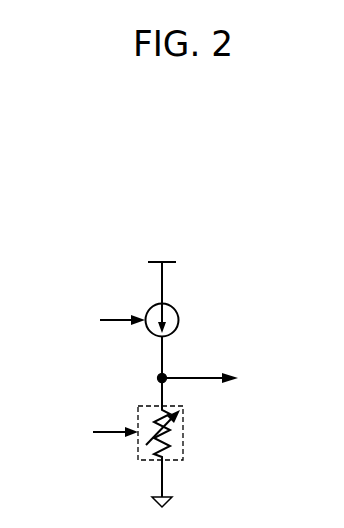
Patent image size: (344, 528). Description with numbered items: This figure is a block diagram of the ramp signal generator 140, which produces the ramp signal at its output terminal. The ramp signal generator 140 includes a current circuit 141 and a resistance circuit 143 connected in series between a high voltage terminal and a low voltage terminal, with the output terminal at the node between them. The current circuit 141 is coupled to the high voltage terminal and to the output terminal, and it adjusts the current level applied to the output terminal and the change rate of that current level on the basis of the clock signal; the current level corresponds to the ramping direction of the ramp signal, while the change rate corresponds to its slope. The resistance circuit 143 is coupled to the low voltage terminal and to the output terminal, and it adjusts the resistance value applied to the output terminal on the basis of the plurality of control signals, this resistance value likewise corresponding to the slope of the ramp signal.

The ramp signal generator 140 is at (146, 243).
The current circuit 141 is at (175, 307).
The resistance circuit 143 is at (170, 405).